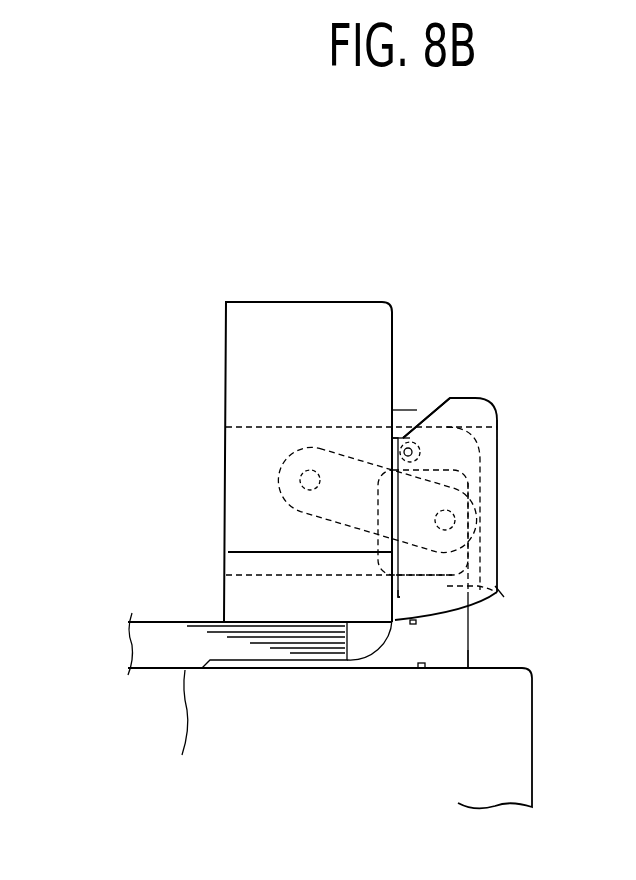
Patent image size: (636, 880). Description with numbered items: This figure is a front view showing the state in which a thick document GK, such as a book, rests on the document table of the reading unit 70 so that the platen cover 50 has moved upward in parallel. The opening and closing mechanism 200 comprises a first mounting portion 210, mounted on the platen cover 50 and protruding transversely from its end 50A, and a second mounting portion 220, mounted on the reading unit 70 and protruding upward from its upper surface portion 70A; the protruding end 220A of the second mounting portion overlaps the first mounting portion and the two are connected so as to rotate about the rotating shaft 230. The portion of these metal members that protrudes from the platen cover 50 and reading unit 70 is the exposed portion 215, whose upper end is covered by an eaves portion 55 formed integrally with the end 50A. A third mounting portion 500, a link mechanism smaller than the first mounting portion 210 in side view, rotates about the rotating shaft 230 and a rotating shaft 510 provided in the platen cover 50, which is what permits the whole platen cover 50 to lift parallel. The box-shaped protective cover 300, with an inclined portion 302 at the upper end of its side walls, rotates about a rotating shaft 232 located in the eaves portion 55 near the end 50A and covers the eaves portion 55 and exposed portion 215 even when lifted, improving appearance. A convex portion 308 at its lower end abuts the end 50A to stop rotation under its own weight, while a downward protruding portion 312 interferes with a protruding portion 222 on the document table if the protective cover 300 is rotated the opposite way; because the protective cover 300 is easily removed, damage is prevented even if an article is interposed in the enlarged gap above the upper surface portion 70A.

The platen cover 50 is at (298, 302).
The end of the platen cover 50A is at (393, 325).
The eaves portion 55 is at (413, 410).
The opening and closing mechanism 200 is at (508, 327).
The protective cover 300 is at (497, 411).
The inclined portion 302 is at (442, 402).
The first mounting portion 210 is at (498, 436).
The exposed portion 215 is at (504, 597).
The rotating shaft 230 is at (468, 472).
The rotating shaft 232 is at (400, 448).
The third mounting portion 500 is at (278, 450).
The rotating shaft 510 is at (300, 481).
The convex portion 308 is at (393, 613).
The protruding portion 312 is at (412, 625).
The protruding portion 222 is at (420, 669).
The second mounting portion 220 is at (456, 652).
The end of the second mounting portion 220A is at (472, 650).
The reading unit 70 is at (533, 731).
The upper surface portion of the reading unit 70A is at (510, 668).
The thick document GK is at (153, 660).